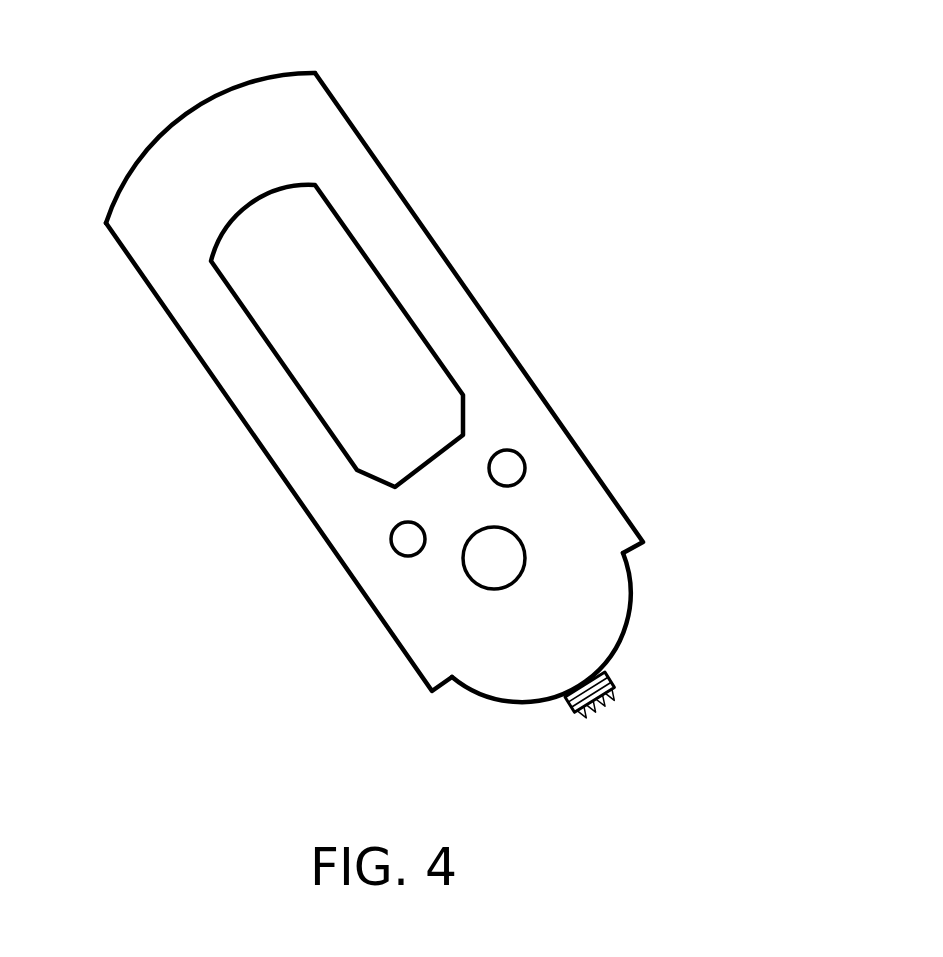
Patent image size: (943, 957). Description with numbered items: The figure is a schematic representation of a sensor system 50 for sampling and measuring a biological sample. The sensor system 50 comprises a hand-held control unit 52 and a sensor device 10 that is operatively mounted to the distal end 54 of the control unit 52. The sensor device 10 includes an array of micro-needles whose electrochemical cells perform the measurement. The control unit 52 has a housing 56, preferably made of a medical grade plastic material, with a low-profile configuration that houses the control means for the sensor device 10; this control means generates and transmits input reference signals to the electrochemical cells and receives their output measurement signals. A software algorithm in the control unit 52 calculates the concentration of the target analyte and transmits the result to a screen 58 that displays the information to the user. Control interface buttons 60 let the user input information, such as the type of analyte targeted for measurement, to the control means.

The sensor device 10 is at (618, 712).
The sensor system 50 is at (517, 258).
The hand-held control unit 52 is at (575, 492).
The distal end 54 is at (592, 628).
The housing 56 is at (368, 140).
The screen 58 is at (292, 292).
The control interface buttons 60 is at (408, 538).